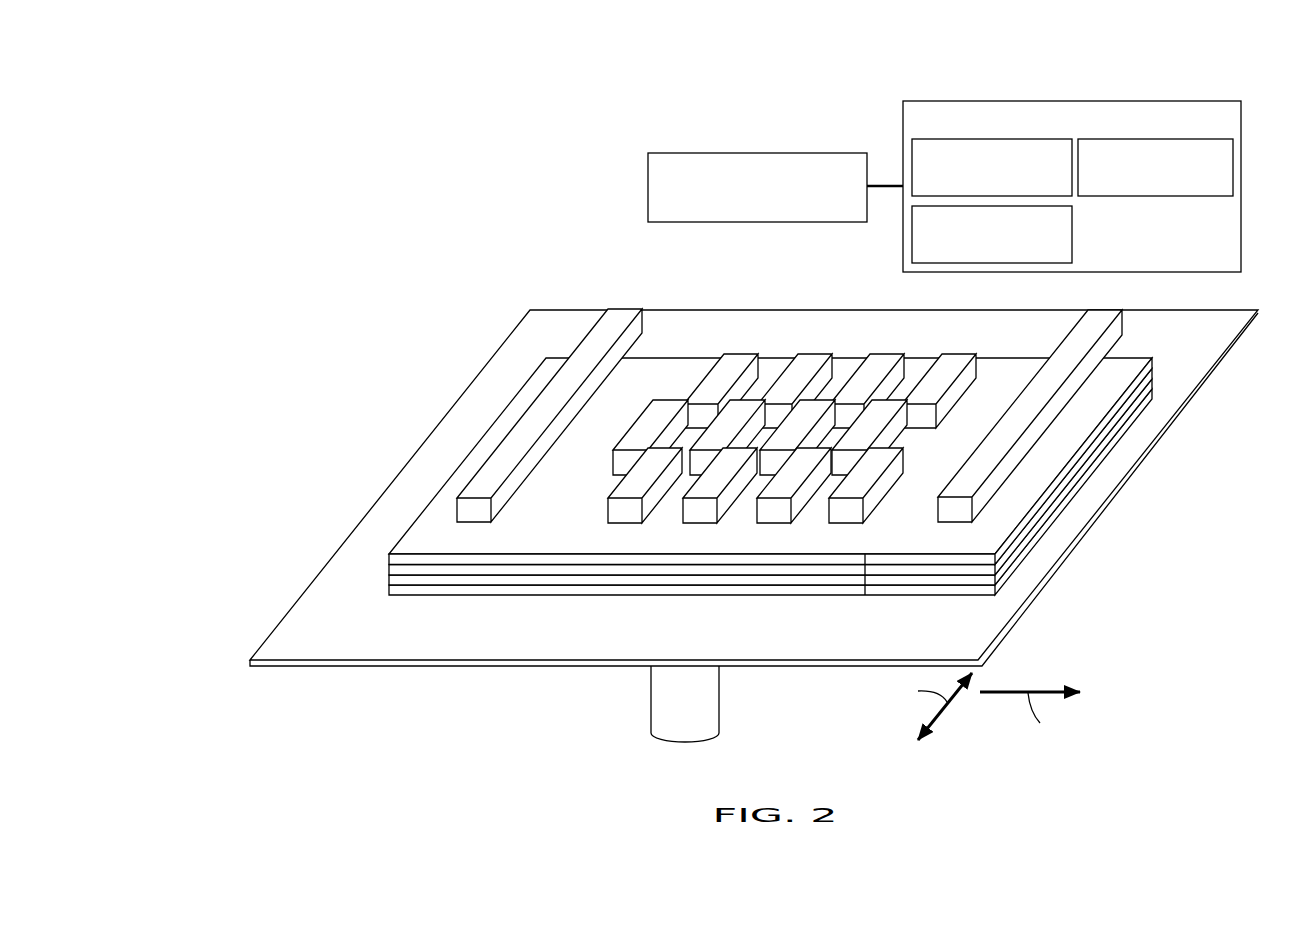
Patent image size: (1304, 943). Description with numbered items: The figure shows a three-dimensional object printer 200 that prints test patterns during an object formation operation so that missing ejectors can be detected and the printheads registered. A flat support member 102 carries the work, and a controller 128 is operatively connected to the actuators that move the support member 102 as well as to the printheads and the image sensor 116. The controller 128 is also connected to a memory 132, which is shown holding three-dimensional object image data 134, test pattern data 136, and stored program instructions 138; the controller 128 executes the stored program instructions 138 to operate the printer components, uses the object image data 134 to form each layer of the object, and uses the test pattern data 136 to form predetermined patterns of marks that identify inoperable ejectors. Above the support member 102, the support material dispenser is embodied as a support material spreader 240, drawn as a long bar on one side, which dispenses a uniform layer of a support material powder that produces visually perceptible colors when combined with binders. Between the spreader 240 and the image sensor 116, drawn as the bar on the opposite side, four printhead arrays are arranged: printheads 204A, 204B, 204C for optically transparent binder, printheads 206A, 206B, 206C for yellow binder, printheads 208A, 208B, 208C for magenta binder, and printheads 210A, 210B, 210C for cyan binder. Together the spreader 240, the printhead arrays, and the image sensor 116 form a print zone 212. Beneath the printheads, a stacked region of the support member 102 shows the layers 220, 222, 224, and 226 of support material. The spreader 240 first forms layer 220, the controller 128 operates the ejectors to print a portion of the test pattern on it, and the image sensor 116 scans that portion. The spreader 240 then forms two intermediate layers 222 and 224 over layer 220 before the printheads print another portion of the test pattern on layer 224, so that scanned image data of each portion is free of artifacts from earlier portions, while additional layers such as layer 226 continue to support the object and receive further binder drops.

The support member 102 is at (438, 422).
The image sensor 116 is at (1107, 307).
The controller 128 is at (758, 152).
The memory 132 is at (903, 120).
The 3D object image data 134 is at (952, 139).
The test pattern data 136 is at (1155, 139).
The stored program instructions 138 is at (912, 240).
The three-dimensional object printer 200 is at (456, 196).
The print zone 212 is at (631, 249).
The support material spreader 240 is at (625, 309).
The cyan binder printhead 210A is at (622, 509).
The magenta binder printhead 208A is at (697, 509).
The yellow binder printhead 206A is at (771, 509).
The optically transparent binder printhead 204A is at (843, 509).
The cyan binder printhead 210B is at (677, 400).
The magenta binder printhead 208B is at (756, 400).
The yellow binder printhead 206B is at (830, 400).
The optically transparent binder printhead 204B is at (902, 400).
The cyan binder printhead 210C is at (735, 353).
The magenta binder printhead 208C is at (817, 353).
The yellow binder printhead 206C is at (889, 353).
The optically transparent binder printhead 204C is at (962, 353).
The support material layer 220 is at (1040, 537).
The support material layer 222 is at (1057, 507).
The support material layer 224 is at (1068, 479).
The support material layer 226 is at (1080, 450).